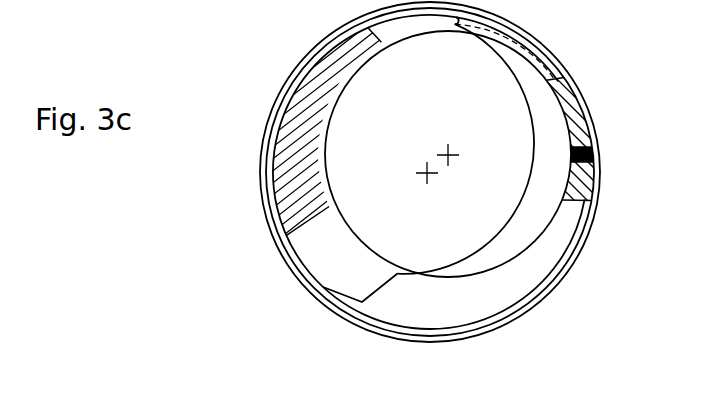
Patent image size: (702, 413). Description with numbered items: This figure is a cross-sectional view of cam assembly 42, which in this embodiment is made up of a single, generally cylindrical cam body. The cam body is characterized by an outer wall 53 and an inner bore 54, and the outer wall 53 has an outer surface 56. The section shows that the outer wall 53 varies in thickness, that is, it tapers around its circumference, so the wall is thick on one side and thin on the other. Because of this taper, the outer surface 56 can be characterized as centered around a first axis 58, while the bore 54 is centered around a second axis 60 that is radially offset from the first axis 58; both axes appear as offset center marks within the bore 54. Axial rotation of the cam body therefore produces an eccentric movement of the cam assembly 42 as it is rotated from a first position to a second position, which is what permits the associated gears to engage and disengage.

The cam assembly 42 is at (344, 326).
The outer wall 53 is at (353, 50).
The inner bore 54 is at (562, 133).
The outer surface 56 is at (262, 173).
The first axis 58 is at (318, 294).
The second axis 60 is at (318, 294).